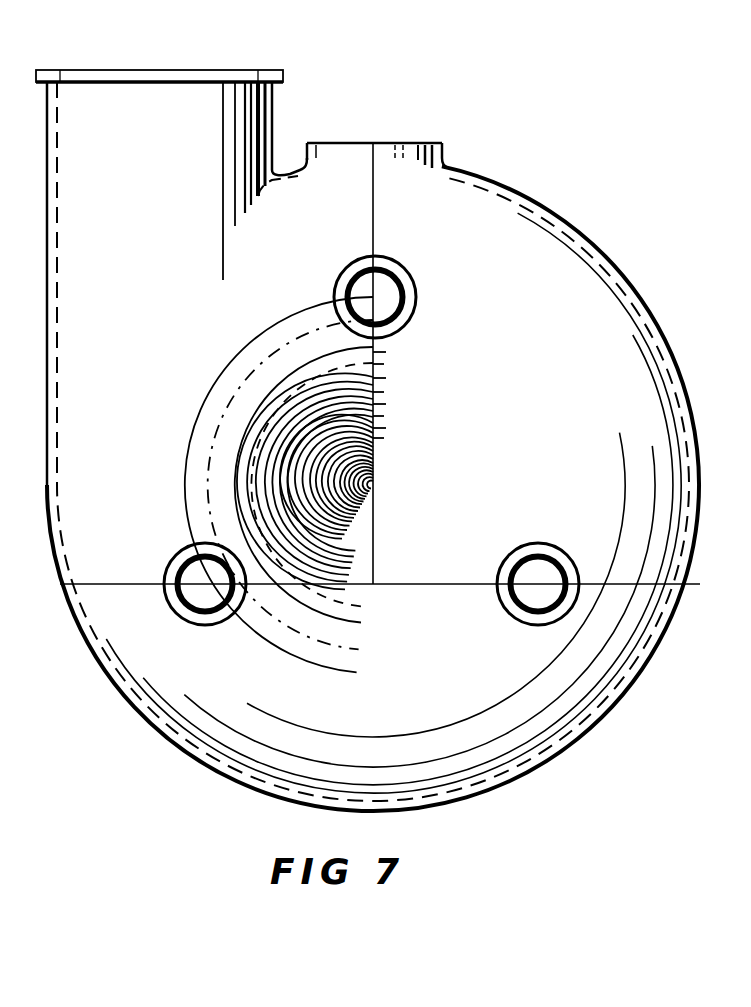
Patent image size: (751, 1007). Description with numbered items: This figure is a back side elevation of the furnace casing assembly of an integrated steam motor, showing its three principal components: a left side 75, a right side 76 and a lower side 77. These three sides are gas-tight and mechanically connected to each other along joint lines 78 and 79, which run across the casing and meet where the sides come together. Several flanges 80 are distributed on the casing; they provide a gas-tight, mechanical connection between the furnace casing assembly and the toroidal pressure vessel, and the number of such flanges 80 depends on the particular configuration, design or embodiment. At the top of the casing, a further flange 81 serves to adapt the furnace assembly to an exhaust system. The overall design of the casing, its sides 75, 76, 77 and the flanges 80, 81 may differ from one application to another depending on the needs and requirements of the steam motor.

The left side 75 is at (338, 158).
The right side 76 is at (395, 158).
The lower side 77 is at (636, 600).
The joint line 78 is at (428, 584).
The joint line 79 is at (373, 518).
The flange 80 is at (540, 543).
The flange 81 is at (130, 70).